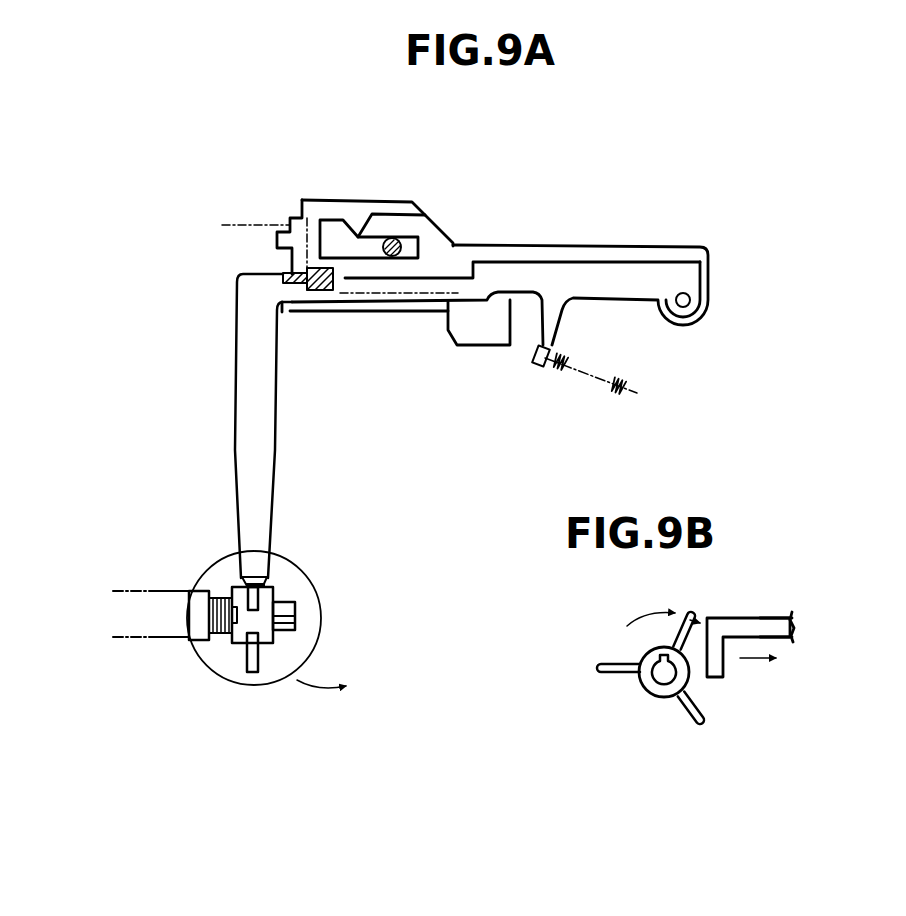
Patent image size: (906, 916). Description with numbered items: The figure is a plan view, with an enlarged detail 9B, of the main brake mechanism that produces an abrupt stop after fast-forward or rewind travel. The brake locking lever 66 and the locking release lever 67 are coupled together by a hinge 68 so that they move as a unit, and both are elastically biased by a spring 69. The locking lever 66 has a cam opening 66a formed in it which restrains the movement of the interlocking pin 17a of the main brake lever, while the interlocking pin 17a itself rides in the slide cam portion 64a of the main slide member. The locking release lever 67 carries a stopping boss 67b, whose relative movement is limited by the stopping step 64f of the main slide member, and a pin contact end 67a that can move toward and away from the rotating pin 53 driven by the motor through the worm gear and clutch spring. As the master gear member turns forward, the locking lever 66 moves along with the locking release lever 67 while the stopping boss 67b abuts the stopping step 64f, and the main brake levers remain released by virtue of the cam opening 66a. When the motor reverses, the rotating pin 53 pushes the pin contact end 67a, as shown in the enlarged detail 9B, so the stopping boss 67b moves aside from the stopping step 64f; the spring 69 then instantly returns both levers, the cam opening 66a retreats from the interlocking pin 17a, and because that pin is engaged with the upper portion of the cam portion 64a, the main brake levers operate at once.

In FIG. 9A, the interlocking pin 17a is at (393, 238).
In FIG. 9A, the slide cam portion 64a is at (460, 240).
In FIG. 9A, the brake locking lever 66 is at (590, 258).
In FIG. 9A, the stopping boss 67b is at (283, 278).
In FIG. 9A, the locking release lever 67 is at (240, 376).
In FIG. 9B, the locking release lever 67 is at (771, 618).
In FIG. 9A, the stopping step 64f is at (312, 306).
In FIG. 9A, the cam opening 66a is at (378, 254).
In FIG. 9A, the hinge 68 is at (685, 303).
In FIG. 9A, the spring 69 is at (599, 407).
In FIG. 9A, the pin contact end 67a is at (263, 582).
In FIG. 9B, the pin contact end 67a is at (723, 677).
In FIG. 9A, the rotating pin 53 is at (248, 680).
In FIG. 9B, the rotating pin 53 is at (696, 724).
In FIG. 9A, the detail circle 9B is at (275, 684).